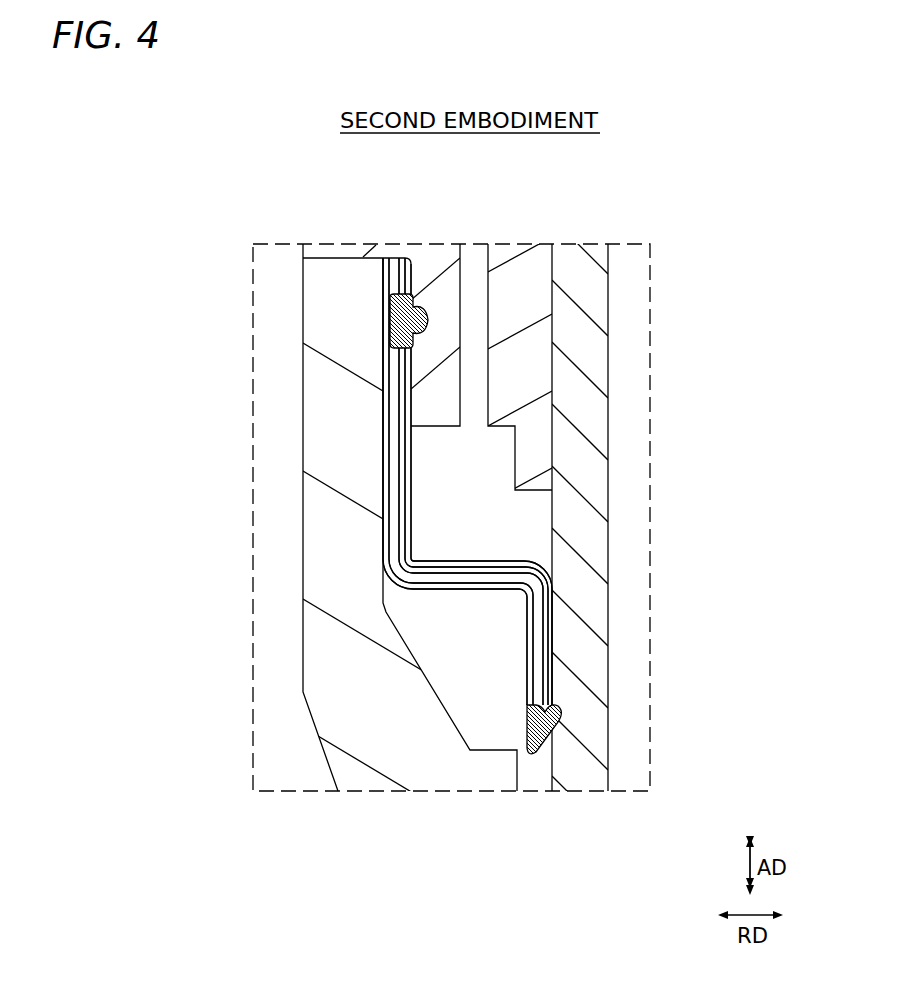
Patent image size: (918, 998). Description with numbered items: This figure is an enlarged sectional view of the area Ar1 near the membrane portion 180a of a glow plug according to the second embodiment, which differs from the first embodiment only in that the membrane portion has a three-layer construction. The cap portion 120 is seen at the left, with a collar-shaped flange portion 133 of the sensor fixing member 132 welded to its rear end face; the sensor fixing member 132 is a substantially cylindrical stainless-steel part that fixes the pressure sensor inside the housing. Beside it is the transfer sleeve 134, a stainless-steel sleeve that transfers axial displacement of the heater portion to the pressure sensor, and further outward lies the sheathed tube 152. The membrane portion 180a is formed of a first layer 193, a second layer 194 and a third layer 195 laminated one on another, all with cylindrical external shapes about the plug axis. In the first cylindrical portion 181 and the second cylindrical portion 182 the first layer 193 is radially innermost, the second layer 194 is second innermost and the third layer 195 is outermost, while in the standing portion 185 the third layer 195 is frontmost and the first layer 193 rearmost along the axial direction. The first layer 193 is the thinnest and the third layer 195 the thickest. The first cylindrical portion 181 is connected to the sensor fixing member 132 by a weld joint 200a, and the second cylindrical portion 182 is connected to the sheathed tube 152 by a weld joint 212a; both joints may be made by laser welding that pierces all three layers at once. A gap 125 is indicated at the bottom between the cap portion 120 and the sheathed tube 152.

The cap portion 120 is at (328, 764).
The gap passage 125 is at (532, 797).
The sensor fixing member 132 is at (449, 273).
The flange portion 133 is at (318, 248).
The transfer sleeve 134 is at (527, 363).
The sheathed tube 152 is at (582, 532).
The membrane portion 180a is at (334, 481).
The first cylindrical portion 181 is at (384, 461).
The second cylindrical portion 182 is at (524, 682).
The standing portion 185 is at (478, 559).
The first layer 193 is at (407, 401).
The second layer 194 is at (401, 428).
The third layer 195 is at (393, 448).
The weld joint 200a is at (392, 316).
The weld joint 212a is at (557, 718).
The area Ar1 is at (652, 285).